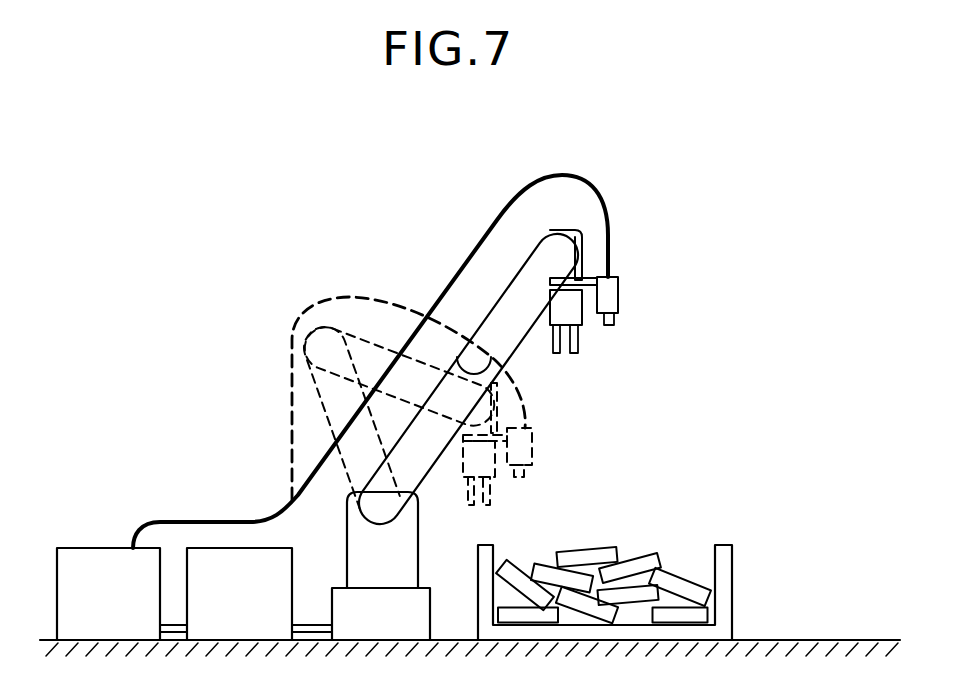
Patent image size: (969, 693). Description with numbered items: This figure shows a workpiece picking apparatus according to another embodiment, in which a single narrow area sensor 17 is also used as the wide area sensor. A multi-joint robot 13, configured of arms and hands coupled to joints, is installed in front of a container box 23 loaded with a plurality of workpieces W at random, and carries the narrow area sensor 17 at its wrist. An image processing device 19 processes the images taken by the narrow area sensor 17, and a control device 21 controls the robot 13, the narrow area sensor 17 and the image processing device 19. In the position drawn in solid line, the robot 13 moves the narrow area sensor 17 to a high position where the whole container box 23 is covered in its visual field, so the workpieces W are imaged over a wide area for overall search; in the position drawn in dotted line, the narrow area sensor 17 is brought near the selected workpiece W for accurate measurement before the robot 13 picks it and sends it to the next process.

The robot 13 is at (509, 299).
The narrow area sensor 17 is at (620, 296).
The image processing device 19 is at (90, 555).
The control device 21 is at (283, 548).
The container box 23 is at (733, 564).
The workpiece W is at (655, 557).